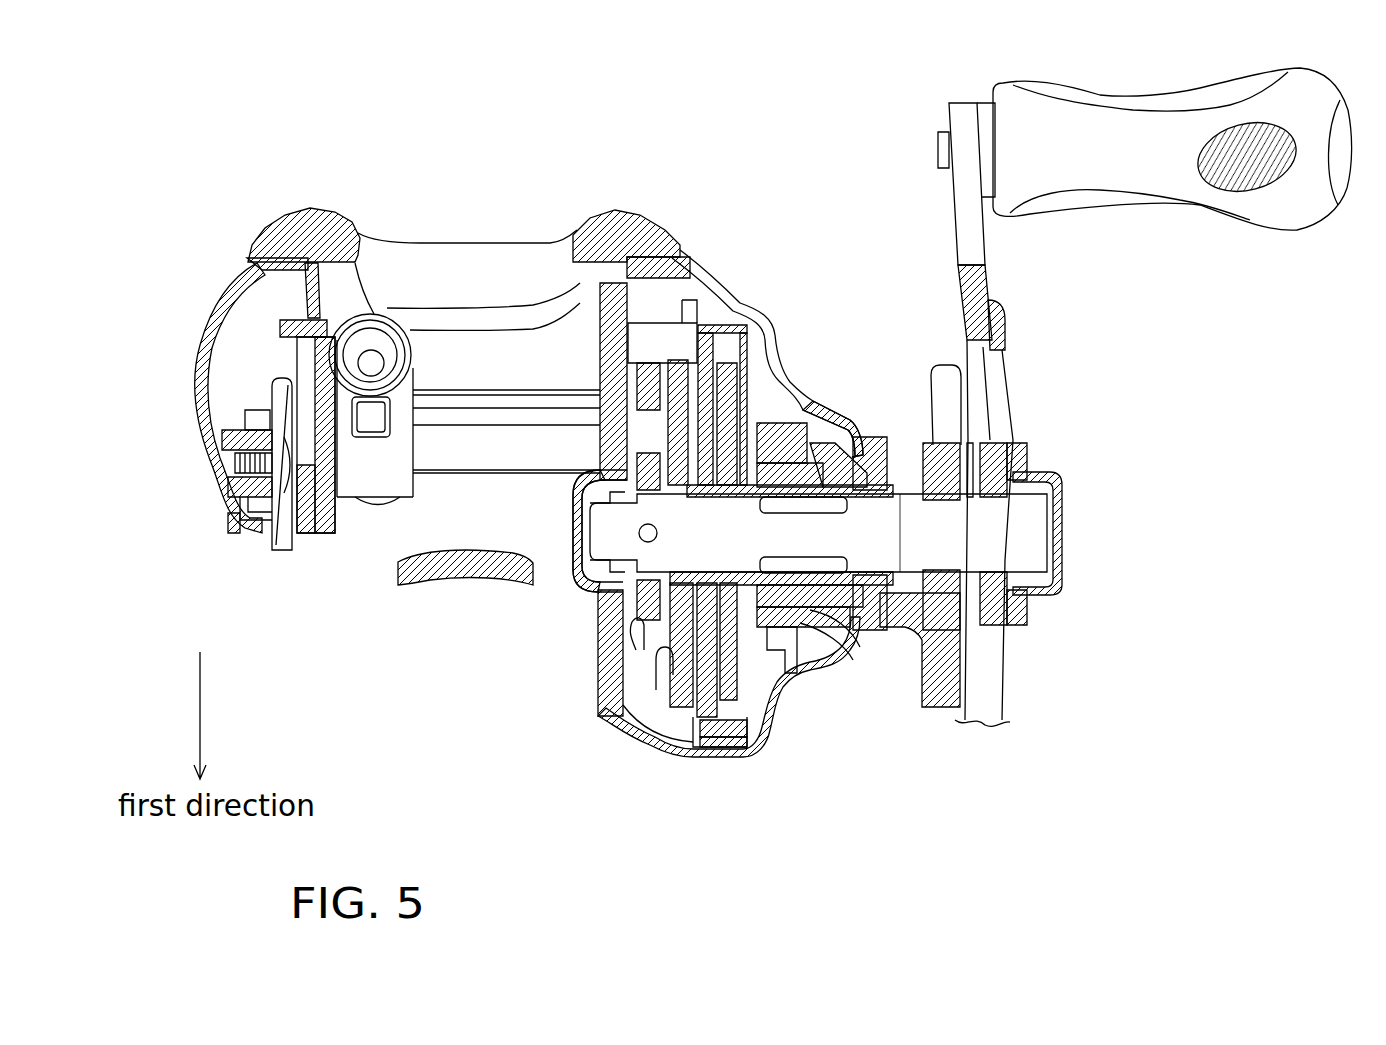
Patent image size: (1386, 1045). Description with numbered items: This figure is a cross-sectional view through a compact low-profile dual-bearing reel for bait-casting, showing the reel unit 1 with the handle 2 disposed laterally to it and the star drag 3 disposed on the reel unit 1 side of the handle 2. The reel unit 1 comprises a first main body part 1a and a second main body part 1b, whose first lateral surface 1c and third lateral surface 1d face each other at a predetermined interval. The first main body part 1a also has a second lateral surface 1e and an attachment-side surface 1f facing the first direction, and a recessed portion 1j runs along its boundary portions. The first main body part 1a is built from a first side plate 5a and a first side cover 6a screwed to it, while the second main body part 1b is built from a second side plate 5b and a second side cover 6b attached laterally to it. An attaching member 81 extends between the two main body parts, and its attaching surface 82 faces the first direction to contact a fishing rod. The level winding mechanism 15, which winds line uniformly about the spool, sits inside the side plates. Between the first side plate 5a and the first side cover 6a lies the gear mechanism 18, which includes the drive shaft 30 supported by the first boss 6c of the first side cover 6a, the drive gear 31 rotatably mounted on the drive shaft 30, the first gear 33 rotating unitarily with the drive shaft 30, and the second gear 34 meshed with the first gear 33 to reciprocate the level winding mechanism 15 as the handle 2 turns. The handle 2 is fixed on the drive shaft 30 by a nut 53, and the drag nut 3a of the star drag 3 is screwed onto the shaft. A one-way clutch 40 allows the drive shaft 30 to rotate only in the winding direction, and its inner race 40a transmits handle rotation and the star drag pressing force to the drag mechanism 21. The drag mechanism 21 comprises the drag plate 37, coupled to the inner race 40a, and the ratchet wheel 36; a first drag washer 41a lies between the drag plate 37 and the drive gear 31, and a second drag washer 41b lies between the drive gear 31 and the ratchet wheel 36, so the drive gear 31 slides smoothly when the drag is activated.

The reel unit 1 is at (745, 164).
The first main body part 1a is at (677, 203).
The second main body part 1b is at (284, 182).
The first lateral surface 1c is at (582, 650).
The third lateral surface 1d is at (345, 508).
The second lateral surface 1e is at (780, 346).
The attachment-side surface 1f is at (730, 738).
The recessed portion 1j is at (640, 745).
The handle 2 is at (980, 253).
The star drag 3 is at (918, 347).
The drag nut 3a is at (912, 455).
The first side plate 5a is at (600, 712).
The second side plate 5b is at (324, 548).
The first side cover 6a is at (752, 302).
The second side cover 6b is at (205, 305).
The first boss 6c is at (845, 617).
The level winding mechanism 15 is at (370, 318).
The gear mechanism 18 is at (750, 748).
The drag mechanism 21 is at (755, 675).
The drive shaft 30 is at (1017, 522).
The drive gear 31 is at (722, 745).
The first gear 33 is at (596, 598).
The second gear 34 is at (650, 368).
The ratchet wheel 36 is at (666, 745).
The drag plate 37 is at (760, 726).
The one-way clutch 40 is at (822, 640).
The inner race 40a is at (800, 662).
The first drag washer 41a is at (745, 735).
The second drag washer 41b is at (700, 722).
The nut 53 is at (1040, 470).
The attaching member 81 is at (421, 598).
The attaching surface 82 is at (460, 580).